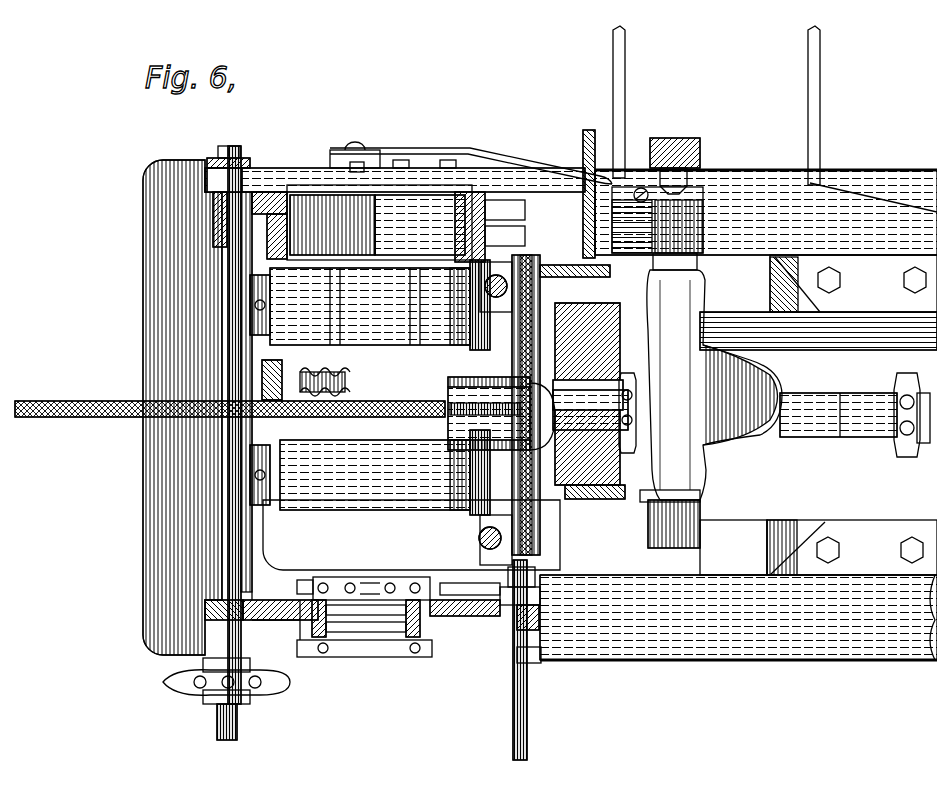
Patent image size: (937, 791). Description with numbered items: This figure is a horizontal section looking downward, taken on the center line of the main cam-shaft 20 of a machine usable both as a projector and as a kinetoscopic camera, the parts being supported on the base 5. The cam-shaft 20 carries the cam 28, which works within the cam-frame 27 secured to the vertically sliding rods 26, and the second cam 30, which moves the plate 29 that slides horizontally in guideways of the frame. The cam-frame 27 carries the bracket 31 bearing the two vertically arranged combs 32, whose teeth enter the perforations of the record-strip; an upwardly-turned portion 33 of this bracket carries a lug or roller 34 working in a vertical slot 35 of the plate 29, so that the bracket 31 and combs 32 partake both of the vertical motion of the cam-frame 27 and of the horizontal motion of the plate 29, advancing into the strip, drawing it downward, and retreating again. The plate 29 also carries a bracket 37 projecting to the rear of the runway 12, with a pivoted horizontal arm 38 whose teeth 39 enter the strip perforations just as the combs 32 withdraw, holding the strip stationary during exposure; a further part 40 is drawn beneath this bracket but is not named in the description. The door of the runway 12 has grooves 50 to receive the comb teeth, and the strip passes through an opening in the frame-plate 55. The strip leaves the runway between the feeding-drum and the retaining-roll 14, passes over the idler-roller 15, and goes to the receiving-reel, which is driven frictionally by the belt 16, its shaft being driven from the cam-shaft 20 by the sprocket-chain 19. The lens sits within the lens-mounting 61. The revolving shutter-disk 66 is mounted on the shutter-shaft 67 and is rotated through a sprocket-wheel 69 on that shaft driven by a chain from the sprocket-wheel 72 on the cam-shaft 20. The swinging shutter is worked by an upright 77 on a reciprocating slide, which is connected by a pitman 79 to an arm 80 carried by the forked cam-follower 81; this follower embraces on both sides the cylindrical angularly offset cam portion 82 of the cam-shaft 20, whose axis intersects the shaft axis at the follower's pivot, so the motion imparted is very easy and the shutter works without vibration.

The base 5 is at (735, 596).
The runway 12 is at (290, 600).
The retaining-roll 14 is at (370, 469).
The idler-roller 15 is at (370, 305).
The belt 16 is at (585, 138).
The sprocket-chain 19 is at (640, 405).
The main cam-shaft 20 is at (835, 408).
The rods 26 is at (510, 272).
The cam-frame 27 is at (494, 413).
The cam 28 is at (538, 401).
The plate 29 is at (545, 315).
The second cam 30 is at (515, 460).
The bracket 31 is at (370, 578).
The combs 32 is at (455, 616).
The upwardly-turned portion 33 is at (510, 605).
The lug or roller 34 is at (540, 588).
The vertical slot 35 is at (536, 570).
The bracket 37 is at (540, 622).
The horizontal arm 38 is at (380, 657).
The teeth 39 is at (320, 655).
The rod 40 is at (527, 716).
The grooves 50 is at (305, 630).
The frame-plate 55 is at (262, 650).
The lens-mounting 61 is at (406, 202).
The shutter-disk 66 is at (44, 418).
The shutter-shaft 67 is at (228, 513).
The sprocket-wheel 69 is at (195, 690).
The sprocket-wheel 72 is at (912, 404).
The upright 77 is at (248, 158).
The pitman 79 is at (462, 154).
The arm 80 is at (670, 190).
The cam-follower 81 is at (711, 409).
The cam portion 82 is at (720, 440).